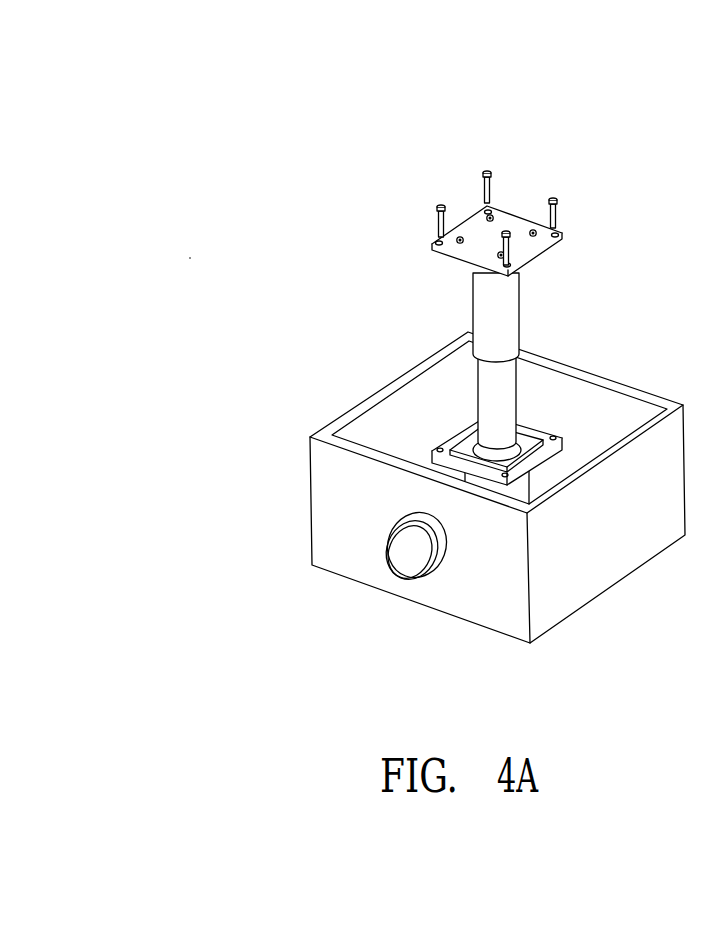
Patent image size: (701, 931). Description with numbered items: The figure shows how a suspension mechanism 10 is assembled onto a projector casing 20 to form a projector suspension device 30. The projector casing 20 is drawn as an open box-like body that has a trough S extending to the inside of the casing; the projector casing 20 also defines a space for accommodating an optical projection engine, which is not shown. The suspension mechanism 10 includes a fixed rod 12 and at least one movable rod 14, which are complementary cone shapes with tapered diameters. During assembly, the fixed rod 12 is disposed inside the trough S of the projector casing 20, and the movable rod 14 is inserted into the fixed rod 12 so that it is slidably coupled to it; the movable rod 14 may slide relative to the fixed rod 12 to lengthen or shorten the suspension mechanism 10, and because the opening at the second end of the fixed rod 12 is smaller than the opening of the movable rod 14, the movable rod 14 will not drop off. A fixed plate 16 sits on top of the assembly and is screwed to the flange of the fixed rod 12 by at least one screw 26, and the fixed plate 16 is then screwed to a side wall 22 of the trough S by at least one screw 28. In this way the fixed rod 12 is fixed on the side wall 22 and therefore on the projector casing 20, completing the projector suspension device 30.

The projector suspension device 30 is at (181, 125).
The suspension mechanism 10 is at (515, 317).
The fixed rod 12 is at (485, 320).
The movable rod 14 is at (519, 388).
The fixed plate 16 is at (540, 255).
The projector casing 20 is at (370, 390).
The side wall 22 is at (460, 439).
The screw 26 is at (489, 216).
The screw 28 is at (439, 226).
The trough S is at (520, 437).